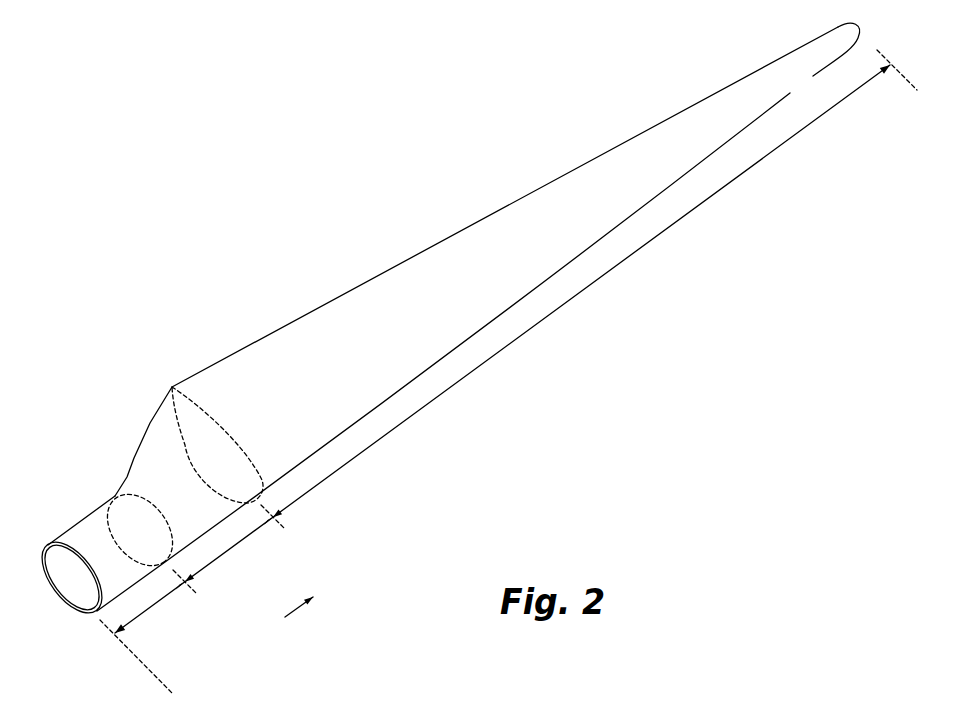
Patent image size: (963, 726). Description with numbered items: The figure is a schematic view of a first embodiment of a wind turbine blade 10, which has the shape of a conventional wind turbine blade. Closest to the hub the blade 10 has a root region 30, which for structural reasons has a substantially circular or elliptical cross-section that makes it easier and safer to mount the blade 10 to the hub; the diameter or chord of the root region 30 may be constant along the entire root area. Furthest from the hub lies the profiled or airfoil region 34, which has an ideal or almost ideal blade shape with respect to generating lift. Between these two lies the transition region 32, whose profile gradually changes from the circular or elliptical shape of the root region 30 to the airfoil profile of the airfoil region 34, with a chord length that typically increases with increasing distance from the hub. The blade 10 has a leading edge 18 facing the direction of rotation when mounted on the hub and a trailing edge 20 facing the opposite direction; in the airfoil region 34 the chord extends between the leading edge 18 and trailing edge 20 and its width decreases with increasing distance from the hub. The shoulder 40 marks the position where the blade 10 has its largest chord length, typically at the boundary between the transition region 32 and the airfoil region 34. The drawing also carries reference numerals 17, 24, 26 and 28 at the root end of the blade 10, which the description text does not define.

The wind turbine blade 10 is at (308, 213).
The root end opening 17 is at (62, 568).
The leading edge 18 is at (610, 232).
The trailing edge 20 is at (503, 208).
The blade root section 24 is at (66, 536).
The root end face 26 is at (60, 613).
The root flange ring 28 is at (66, 540).
The root region 30 is at (150, 607).
The transition region 32 is at (232, 550).
The airfoil region 34 is at (520, 335).
The shoulder 40 is at (172, 387).